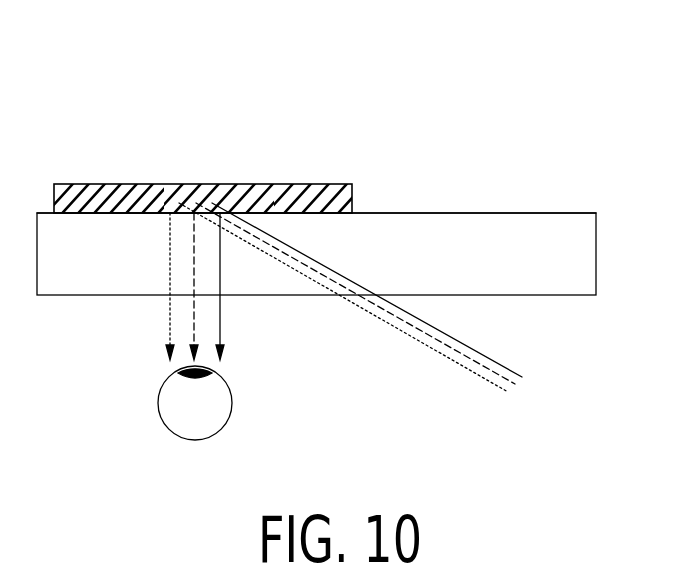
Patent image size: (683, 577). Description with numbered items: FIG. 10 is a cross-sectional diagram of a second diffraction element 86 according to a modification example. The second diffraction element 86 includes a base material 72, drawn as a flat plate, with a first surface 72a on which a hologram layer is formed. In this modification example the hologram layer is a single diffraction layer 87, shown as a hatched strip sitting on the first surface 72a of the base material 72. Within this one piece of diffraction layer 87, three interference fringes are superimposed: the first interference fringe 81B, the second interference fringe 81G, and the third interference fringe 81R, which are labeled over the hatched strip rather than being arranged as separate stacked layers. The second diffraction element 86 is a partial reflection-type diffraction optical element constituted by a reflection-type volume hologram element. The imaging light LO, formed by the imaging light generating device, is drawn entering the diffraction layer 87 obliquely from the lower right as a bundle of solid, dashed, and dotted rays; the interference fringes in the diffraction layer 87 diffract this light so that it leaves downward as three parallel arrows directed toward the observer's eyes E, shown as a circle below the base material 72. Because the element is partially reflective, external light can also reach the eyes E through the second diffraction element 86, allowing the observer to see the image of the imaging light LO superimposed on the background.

The second diffraction element 86 is at (240, 116).
The diffraction layer 87 is at (240, 154).
The first interference fringe 81B is at (101, 184).
The third interference fringe 81R is at (258, 184).
The second interference fringe 81G is at (304, 184).
The base material 72 is at (582, 247).
The first surface 72a is at (505, 213).
The incident light LO is at (458, 367).
The eyes E is at (158, 402).